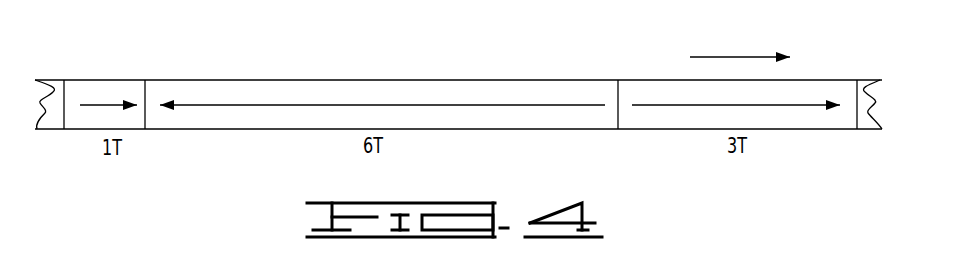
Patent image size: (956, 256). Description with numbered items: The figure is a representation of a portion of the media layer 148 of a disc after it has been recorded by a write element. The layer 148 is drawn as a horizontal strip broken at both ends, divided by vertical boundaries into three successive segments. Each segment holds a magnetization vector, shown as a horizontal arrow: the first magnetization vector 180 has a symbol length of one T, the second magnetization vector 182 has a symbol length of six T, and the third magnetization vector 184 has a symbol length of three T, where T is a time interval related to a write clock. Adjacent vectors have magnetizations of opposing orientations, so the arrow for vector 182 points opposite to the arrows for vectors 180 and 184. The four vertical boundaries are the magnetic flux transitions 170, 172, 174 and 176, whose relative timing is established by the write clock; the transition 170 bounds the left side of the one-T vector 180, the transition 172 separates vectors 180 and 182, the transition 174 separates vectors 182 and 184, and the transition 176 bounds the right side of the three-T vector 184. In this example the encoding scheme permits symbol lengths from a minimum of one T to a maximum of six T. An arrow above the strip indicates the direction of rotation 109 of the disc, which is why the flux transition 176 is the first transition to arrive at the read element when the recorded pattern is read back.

The media layer 148 is at (176, 42).
The direction of rotation 109 is at (737, 55).
The magnetic flux transition 170 is at (65, 143).
The magnetic flux transition 172 is at (152, 142).
The magnetic flux transition 174 is at (623, 140).
The magnetic flux transition 176 is at (855, 140).
The magnetization vector 180 is at (110, 101).
The magnetization vector 182 is at (345, 103).
The magnetization vector 184 is at (670, 100).